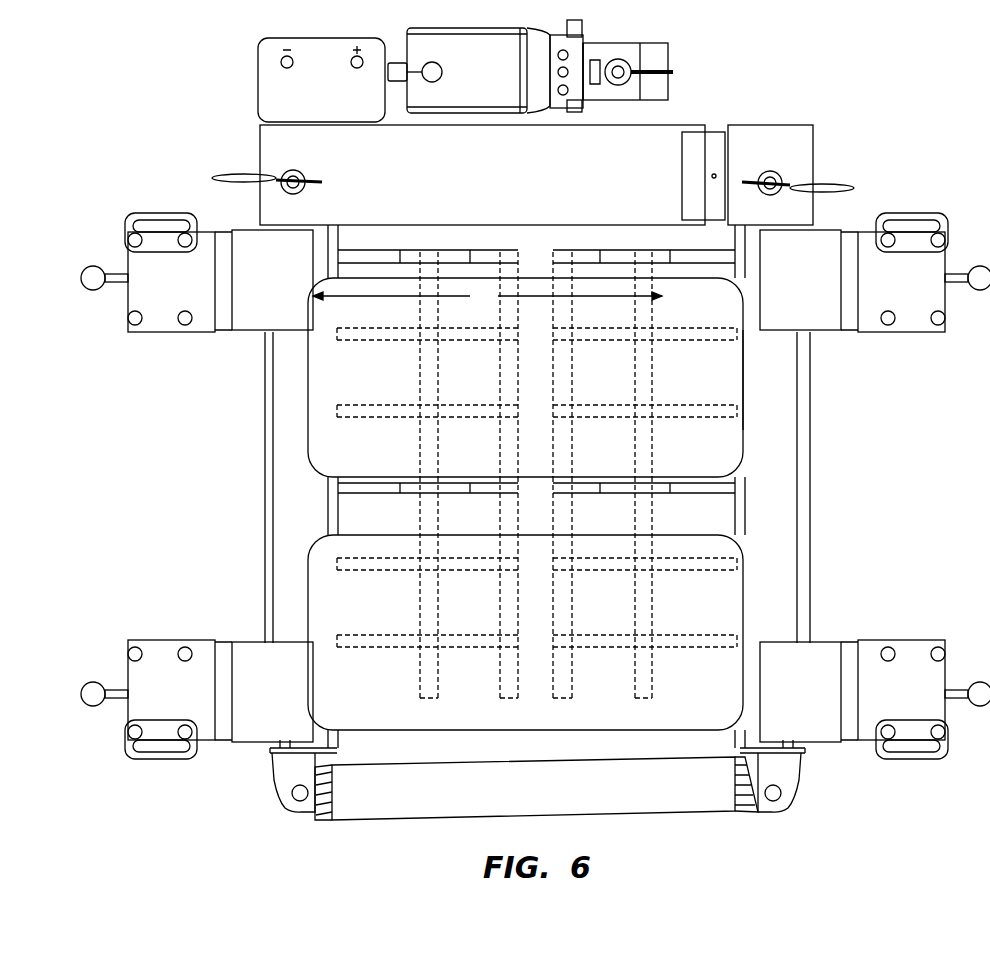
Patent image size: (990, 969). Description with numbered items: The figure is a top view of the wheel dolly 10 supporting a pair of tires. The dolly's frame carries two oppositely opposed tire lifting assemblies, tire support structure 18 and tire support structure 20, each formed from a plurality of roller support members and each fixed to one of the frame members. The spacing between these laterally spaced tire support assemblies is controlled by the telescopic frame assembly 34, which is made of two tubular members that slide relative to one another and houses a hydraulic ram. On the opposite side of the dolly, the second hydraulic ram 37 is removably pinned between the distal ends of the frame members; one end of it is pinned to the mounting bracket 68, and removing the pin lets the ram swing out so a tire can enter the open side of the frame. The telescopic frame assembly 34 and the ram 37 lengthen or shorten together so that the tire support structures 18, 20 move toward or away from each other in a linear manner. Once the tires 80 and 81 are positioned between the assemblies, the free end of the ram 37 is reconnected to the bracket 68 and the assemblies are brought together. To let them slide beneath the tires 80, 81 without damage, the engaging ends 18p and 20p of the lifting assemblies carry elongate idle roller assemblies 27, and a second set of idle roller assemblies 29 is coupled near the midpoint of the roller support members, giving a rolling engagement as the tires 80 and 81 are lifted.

The wheel dolly 10 is at (916, 114).
The tire support structure 18 is at (785, 447).
The engaging end of tire lifting assembly 18p is at (567, 405).
The tire support structure 20 is at (293, 529).
The engaging end of tire lifting assembly 20p is at (515, 407).
The idle roller assembly 27 is at (507, 367).
The idle roller assembly 29 is at (428, 518).
The telescopic frame assembly 34 is at (655, 133).
The second hydraulic ram 37 is at (407, 810).
The mounting bracket 68 is at (785, 773).
The tire 80 is at (742, 434).
The tire 81 is at (742, 556).